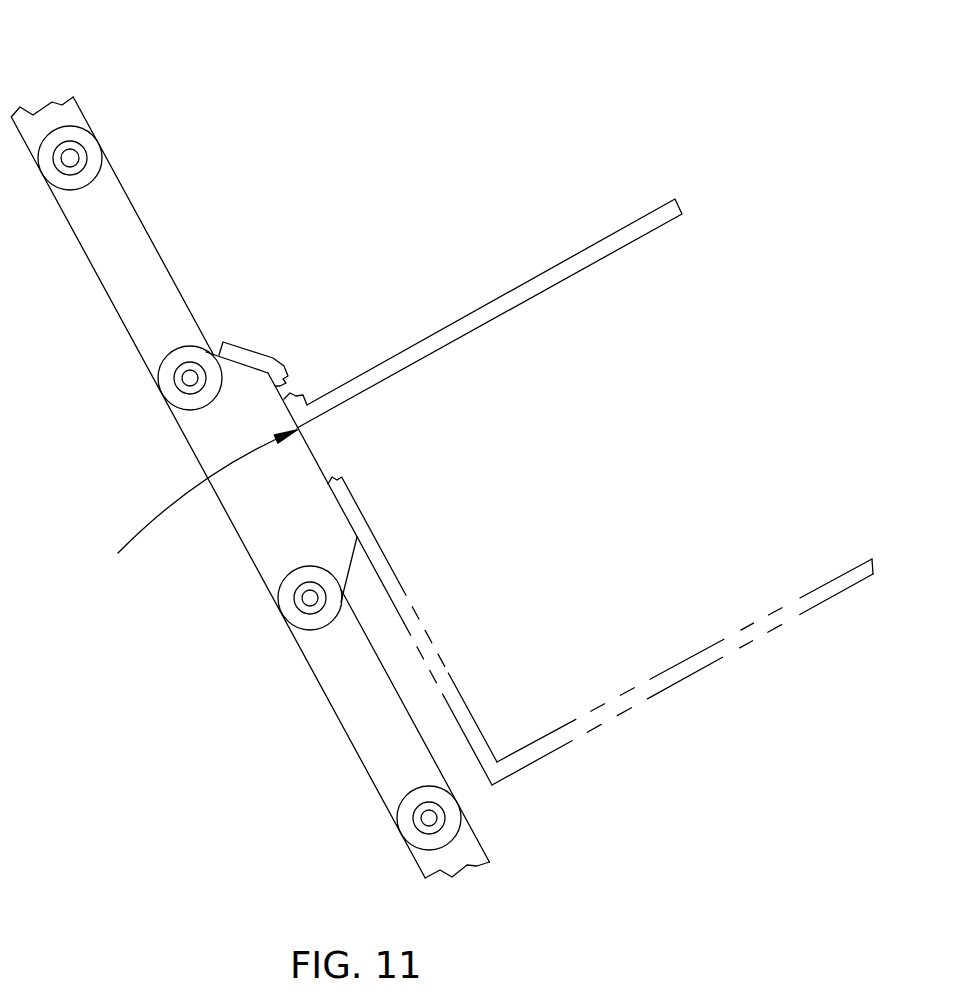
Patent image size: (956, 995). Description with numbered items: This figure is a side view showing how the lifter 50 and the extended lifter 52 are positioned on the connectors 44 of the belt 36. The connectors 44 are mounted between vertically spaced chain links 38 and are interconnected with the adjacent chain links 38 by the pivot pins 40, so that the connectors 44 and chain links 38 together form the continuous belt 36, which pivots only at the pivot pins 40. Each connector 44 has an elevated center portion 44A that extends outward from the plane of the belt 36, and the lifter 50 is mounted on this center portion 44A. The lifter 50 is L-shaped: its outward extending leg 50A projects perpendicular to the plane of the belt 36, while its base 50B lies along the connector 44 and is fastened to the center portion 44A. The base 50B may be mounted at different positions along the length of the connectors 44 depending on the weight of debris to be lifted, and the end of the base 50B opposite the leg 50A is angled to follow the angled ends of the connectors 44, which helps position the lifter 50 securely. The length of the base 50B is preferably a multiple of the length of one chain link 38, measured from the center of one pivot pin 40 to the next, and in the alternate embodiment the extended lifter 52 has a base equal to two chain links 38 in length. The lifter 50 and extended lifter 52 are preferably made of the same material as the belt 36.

The belt 36 is at (68, 110).
The chain link 38 is at (113, 220).
The pivot pin 40 is at (192, 378).
The connector 44 is at (270, 525).
The elevated center portion 44A is at (170, 518).
The lifter 50 is at (456, 251).
The outward extending leg 50A is at (490, 313).
The base 50B is at (258, 360).
The extended lifter 52 is at (455, 672).